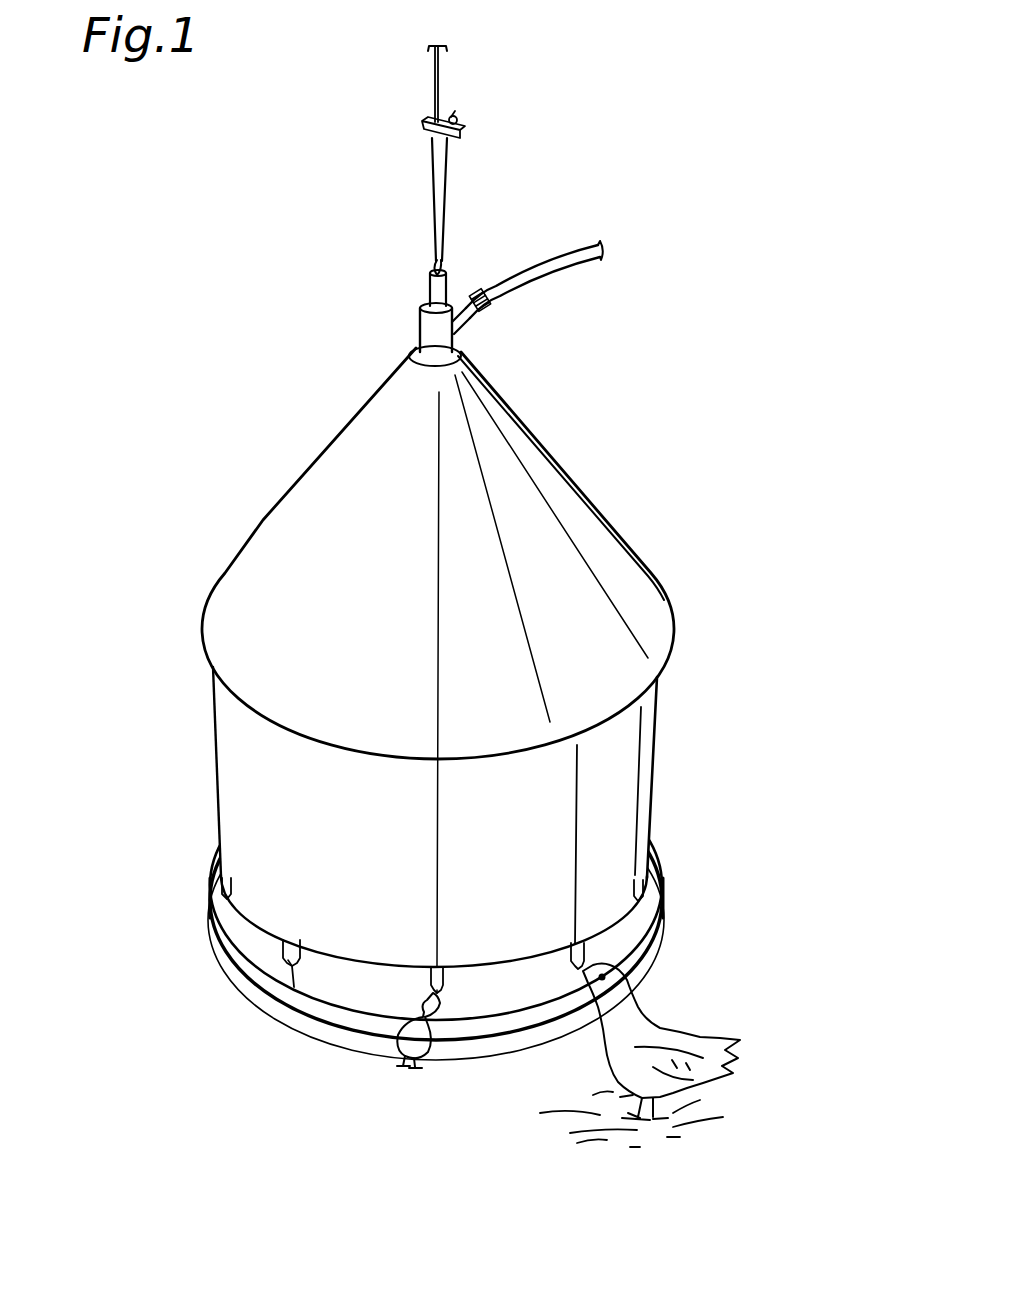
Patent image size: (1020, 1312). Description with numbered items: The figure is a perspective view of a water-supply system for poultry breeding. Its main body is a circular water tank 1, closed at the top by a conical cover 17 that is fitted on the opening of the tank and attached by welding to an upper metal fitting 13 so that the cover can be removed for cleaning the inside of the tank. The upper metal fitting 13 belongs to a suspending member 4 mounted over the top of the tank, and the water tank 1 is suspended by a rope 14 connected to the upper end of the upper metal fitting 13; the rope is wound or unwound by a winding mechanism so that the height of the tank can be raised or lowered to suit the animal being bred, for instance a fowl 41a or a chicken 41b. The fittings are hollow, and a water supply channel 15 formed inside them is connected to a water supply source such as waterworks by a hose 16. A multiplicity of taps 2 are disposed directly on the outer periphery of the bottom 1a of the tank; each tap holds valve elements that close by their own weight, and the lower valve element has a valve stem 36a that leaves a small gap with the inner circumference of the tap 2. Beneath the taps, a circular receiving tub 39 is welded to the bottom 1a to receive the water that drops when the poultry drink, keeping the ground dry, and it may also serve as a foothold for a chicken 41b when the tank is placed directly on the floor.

The water tank 1 is at (632, 768).
The bottom 1a is at (350, 958).
The tap 2 is at (283, 950).
The suspending member 4 is at (418, 308).
The upper metal fitting 13 is at (430, 324).
The rope 14 is at (440, 67).
The water supply channel 15 is at (447, 355).
The hose 16 is at (578, 246).
The conical cover 17 is at (618, 556).
The valve stem 36a is at (294, 987).
The receiving tub 39 is at (208, 951).
The fowl 41a is at (684, 1030).
The chicken 41b is at (410, 1018).